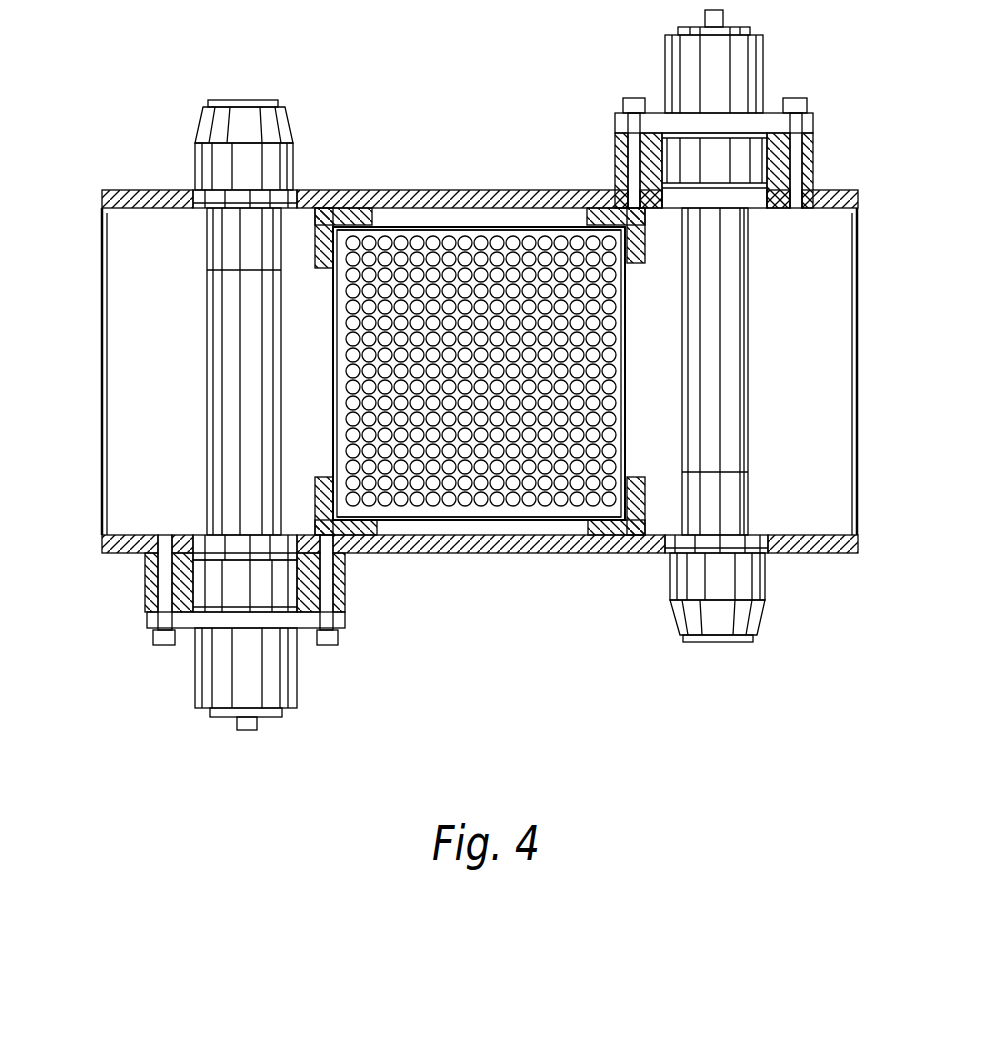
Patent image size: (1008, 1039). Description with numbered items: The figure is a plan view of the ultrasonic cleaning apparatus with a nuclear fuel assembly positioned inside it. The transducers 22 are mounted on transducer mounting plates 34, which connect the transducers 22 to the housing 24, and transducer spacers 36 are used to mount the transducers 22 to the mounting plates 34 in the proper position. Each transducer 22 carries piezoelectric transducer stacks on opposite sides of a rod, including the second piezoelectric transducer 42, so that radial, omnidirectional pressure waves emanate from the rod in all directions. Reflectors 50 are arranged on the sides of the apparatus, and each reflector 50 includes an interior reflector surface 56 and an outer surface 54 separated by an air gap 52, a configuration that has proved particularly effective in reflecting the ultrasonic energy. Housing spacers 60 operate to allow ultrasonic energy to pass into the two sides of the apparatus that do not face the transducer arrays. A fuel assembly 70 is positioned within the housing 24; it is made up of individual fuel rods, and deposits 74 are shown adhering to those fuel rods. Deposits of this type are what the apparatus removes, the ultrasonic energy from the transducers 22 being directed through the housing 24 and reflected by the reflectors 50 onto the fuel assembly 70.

The transducer 22 is at (277, 665).
The housing 24 is at (479, 352).
The transducer mounting plate 34 is at (503, 553).
The transducer spacer 36 is at (168, 563).
The second piezoelectric transducer 42 is at (417, 236).
The reflector 50 is at (480, 371).
The inner wall layer 52 is at (107, 392).
The outer surface 54 is at (100, 330).
The interior reflector surface 56 is at (107, 297).
The housing spacer 60 is at (645, 265).
The fuel assembly 70 is at (443, 226).
The deposits 74 is at (548, 510).